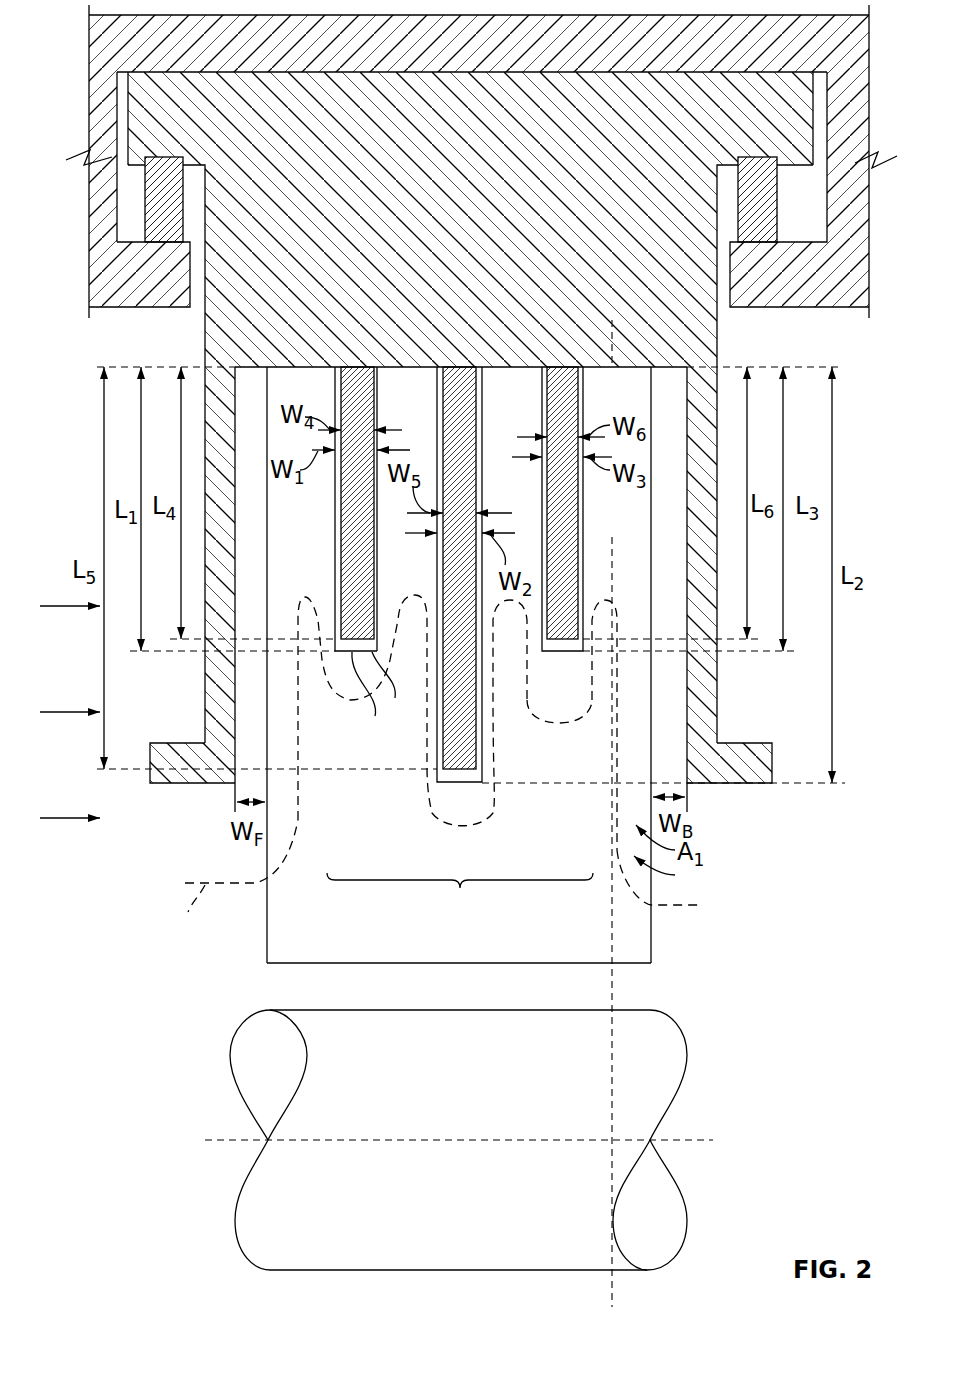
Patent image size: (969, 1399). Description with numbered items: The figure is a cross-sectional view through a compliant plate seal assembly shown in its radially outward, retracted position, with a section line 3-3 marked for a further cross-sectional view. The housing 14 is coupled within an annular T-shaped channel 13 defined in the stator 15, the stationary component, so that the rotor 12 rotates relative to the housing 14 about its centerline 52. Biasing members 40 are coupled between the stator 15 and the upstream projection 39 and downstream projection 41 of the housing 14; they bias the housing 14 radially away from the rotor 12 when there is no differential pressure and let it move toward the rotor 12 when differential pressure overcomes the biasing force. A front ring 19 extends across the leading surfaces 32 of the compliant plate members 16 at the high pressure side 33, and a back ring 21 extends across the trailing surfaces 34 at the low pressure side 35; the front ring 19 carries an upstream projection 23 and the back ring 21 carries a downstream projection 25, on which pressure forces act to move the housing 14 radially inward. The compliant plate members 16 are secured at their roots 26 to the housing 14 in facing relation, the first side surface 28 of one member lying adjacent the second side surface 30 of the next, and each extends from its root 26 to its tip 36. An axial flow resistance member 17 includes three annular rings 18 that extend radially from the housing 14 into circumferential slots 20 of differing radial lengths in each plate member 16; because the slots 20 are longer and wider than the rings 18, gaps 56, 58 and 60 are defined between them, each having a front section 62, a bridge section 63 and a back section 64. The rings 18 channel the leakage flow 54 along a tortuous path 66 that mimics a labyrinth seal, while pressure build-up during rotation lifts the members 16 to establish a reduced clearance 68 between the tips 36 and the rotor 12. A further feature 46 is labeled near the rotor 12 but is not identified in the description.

The section line 3- 3 is at (612, 320).
The rotor 12 is at (672, 1042).
The annular T-shaped channel 13 is at (133, 207).
The housing 14 is at (478, 274).
The stator 15 is at (98, 272).
The compliant plate member 16 is at (640, 920).
The axial flow resistance member 17 is at (460, 902).
The annular ring 18 is at (360, 408).
The front ring 19 is at (212, 717).
The circumferential slot 20 is at (583, 510).
The back ring 21 is at (710, 713).
The upstream projection 23 is at (162, 770).
The downstream projection 25 is at (755, 765).
The root 26 is at (617, 402).
The first side surface 28 is at (371, 824).
The second side surface 30 is at (670, 873).
The leading surface 32 is at (266, 850).
The high pressure side 33 is at (131, 904).
The trailing surface 34 is at (652, 722).
The low pressure side 35 is at (700, 905).
The tip 36 is at (291, 937).
The upstream projection 39 is at (234, 112).
The biasing member 40 is at (152, 214).
The downstream projection 41 is at (712, 112).
The coil top 46 is at (322, 1010).
The centerline 52 is at (240, 1140).
The leakage flow 54 is at (95, 605).
The gap 56 is at (372, 697).
The gap 58 is at (478, 780).
The gap 60 is at (562, 652).
The front section 62 is at (334, 398).
The bridge section 63 is at (394, 687).
The back section 64 is at (377, 578).
The tortuous path 66 is at (188, 914).
The clearance 68 is at (512, 1002).